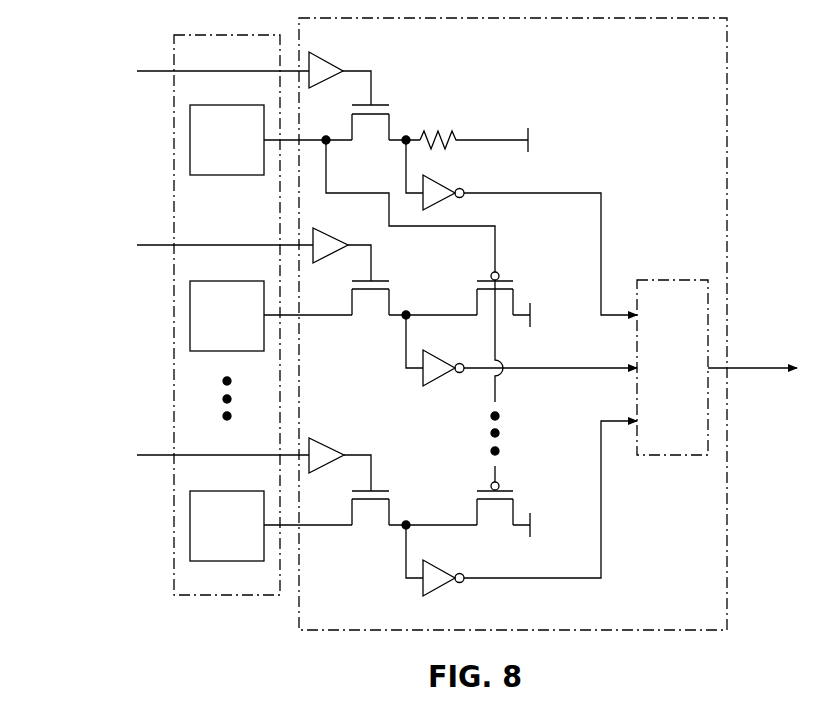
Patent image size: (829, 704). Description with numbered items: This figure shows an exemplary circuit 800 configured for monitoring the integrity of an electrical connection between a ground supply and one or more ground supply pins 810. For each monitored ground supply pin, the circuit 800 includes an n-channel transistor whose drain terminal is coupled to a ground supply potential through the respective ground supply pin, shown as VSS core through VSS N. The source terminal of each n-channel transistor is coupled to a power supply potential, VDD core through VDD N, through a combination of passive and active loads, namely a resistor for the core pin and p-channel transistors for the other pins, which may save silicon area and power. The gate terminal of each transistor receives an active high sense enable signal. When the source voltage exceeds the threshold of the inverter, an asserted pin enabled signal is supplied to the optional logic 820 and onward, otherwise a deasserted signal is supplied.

The circuit 800 is at (706, 621).
The ground supply pins 810 is at (227, 606).
The optional logic 820 is at (690, 270).